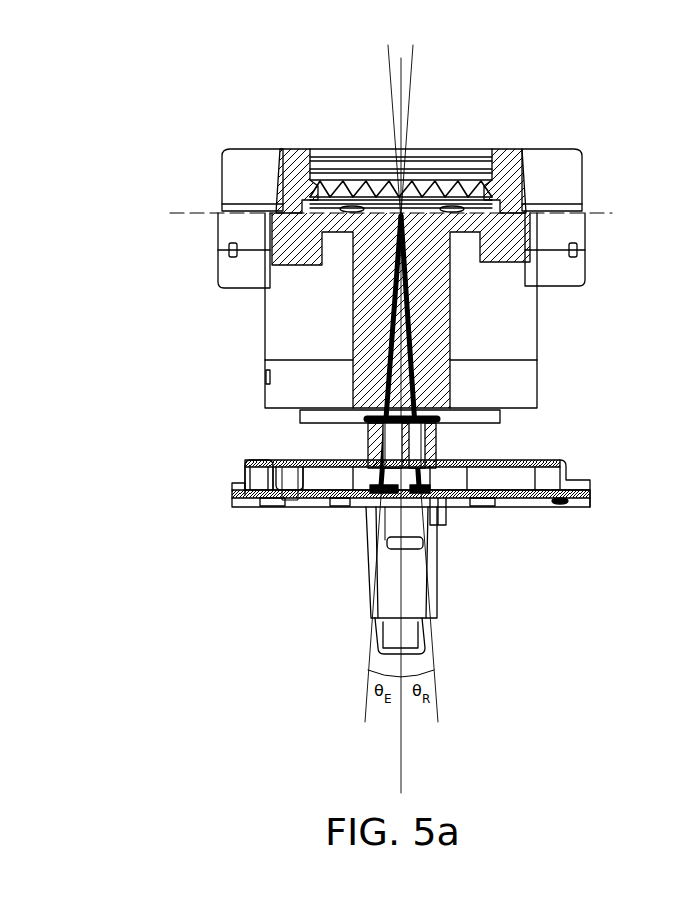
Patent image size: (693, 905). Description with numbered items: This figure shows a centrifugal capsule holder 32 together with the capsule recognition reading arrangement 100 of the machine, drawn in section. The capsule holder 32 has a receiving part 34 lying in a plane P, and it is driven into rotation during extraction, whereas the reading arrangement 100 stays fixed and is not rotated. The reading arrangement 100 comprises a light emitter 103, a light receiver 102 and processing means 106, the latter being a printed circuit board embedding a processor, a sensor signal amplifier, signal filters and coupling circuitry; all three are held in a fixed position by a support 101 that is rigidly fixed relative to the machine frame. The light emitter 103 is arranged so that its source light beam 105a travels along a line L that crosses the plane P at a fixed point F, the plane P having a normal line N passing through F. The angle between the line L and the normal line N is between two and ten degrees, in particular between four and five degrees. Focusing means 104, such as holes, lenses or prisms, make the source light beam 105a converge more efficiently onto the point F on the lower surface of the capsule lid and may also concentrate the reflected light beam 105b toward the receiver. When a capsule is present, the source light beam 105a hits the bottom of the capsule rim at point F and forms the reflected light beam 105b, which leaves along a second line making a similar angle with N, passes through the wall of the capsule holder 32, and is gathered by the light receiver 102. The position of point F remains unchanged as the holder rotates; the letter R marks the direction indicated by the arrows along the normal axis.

The capsule holder 32 is at (567, 184).
The receiving part 34 is at (425, 213).
The reading arrangement 100 is at (205, 410).
The support 101 is at (236, 493).
The light receiver 102 is at (370, 492).
The light emitter 103 is at (441, 498).
The focusing means 104 is at (355, 401).
The source light beam 105a is at (412, 317).
The reflected light beam 105b is at (388, 308).
The processing means 106 is at (530, 498).
The fixed point F is at (399, 213).
The normal line N is at (400, 426).
The line L is at (388, 62).
The rotation direction R is at (390, 85).
The plane P is at (398, 214).